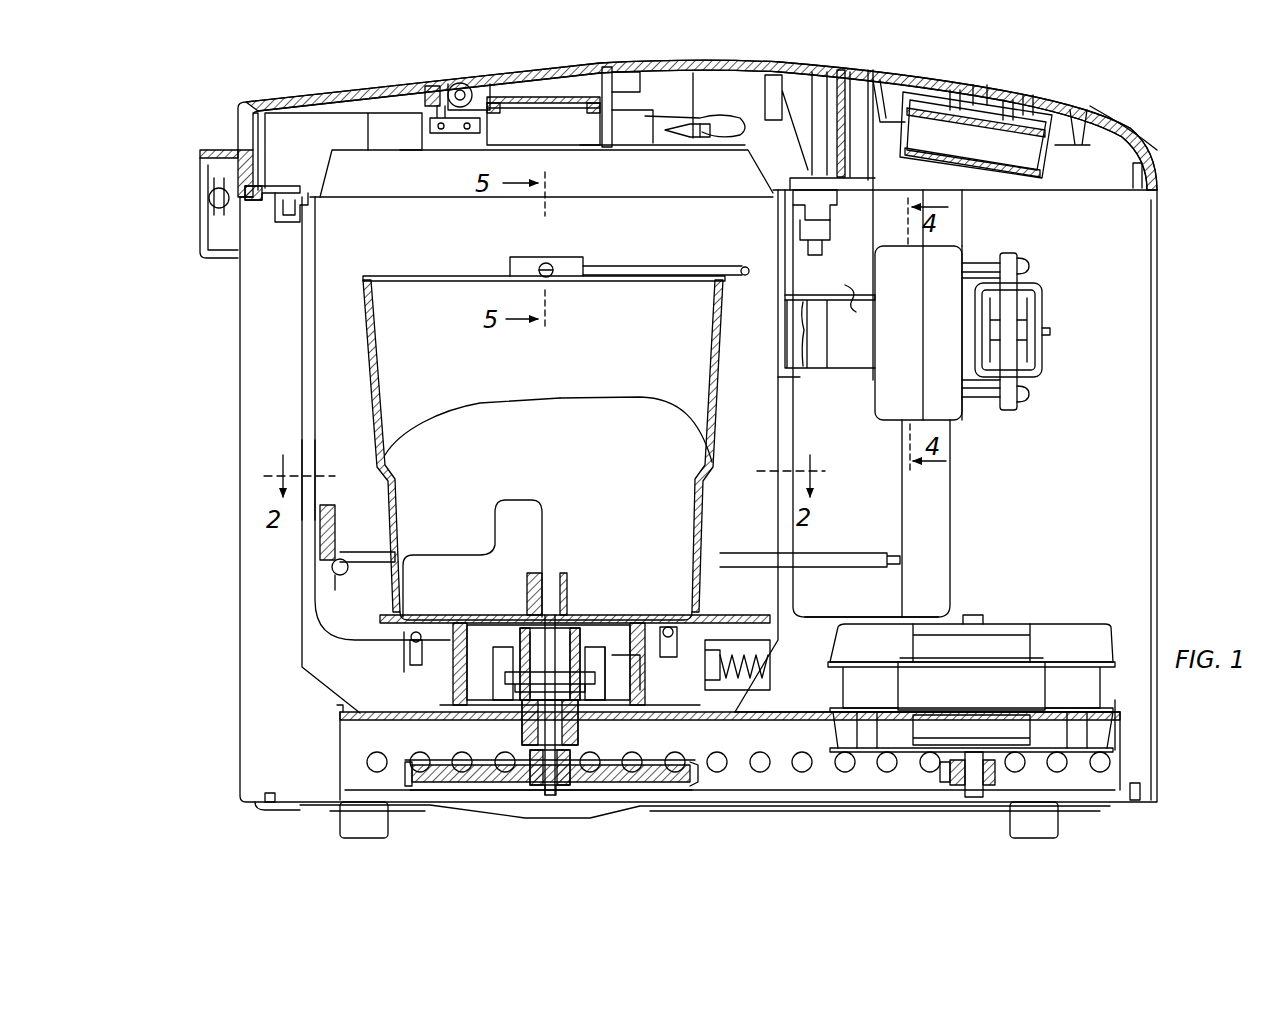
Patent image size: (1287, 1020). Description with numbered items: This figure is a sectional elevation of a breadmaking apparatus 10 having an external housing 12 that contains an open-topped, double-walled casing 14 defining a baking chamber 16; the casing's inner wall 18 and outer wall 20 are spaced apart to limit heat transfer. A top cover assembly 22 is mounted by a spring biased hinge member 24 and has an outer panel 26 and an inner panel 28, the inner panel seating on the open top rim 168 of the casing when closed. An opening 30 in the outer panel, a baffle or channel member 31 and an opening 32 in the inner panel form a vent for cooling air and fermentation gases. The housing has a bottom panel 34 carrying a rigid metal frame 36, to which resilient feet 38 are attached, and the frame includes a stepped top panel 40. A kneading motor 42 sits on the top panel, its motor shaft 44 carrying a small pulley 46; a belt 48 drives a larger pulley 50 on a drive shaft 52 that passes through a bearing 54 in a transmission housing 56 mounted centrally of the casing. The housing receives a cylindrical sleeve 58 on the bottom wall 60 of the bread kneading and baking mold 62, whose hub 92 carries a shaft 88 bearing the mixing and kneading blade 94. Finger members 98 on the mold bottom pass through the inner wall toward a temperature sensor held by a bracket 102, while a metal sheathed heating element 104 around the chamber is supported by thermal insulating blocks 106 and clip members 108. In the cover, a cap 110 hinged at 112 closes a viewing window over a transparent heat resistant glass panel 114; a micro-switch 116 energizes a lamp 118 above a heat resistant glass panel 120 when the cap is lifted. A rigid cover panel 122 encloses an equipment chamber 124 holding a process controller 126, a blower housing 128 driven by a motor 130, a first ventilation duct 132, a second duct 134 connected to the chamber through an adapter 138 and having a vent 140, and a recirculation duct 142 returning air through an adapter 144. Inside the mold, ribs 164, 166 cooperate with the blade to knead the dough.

The breadmaking apparatus 10 is at (170, 125).
The external housing 12 is at (240, 303).
The double-walled casing 14 is at (298, 388).
The baking chamber 16 is at (452, 251).
The inner wall 18 is at (315, 455).
The outer wall 20 is at (302, 428).
The top cover assembly 22 is at (668, 59).
The spring biased hinge member 24 is at (205, 232).
The outer panel 26 is at (740, 64).
The inner panel 28 is at (750, 148).
The opening 30 is at (244, 112).
The baffle or channel member 31 is at (343, 100).
The opening 32 is at (395, 140).
The bottom panel 34 is at (300, 808).
The rigid metal frame 36 is at (340, 760).
The resilient feet 38 is at (388, 817).
The stepped top panel 40 is at (778, 722).
The kneading motor 42 is at (1075, 630).
The motor shaft 44 is at (978, 800).
The small pulley 46 is at (945, 778).
The belt 48 is at (742, 790).
The larger pulley 50 is at (608, 778).
The drive shaft 52 is at (545, 790).
The bearing 54 is at (578, 735).
The transmission housing 56 is at (455, 700).
The cylindrical sleeve 58 is at (635, 668).
The bottom wall 60 is at (622, 618).
The bread kneading and baking mold 62 is at (356, 305).
The shaft 88 is at (550, 575).
The hub 92 is at (575, 600).
The mixing and kneading blade 94 is at (525, 510).
The finger members 98 is at (402, 660).
The bracket 102 is at (728, 690).
The metal sheathed heating element 104 is at (722, 560).
The thermal insulating blocks 106 is at (395, 552).
The clip members 108 is at (340, 578).
The cap 110 is at (604, 67).
The hinge 112 is at (470, 84).
The transparent heat resistant glass panel 114 is at (548, 97).
The micro-switch 116 is at (434, 86).
The lamp 118 is at (700, 150).
The heat resistant glass panel 120 is at (655, 140).
The rigid cover panel 122 is at (1138, 124).
The equipment chamber 124 is at (1150, 235).
The process controller 126 is at (928, 80).
The blower housing 128 is at (962, 418).
The motor 130 is at (1044, 372).
The first ventilation duct 132 is at (965, 222).
The second duct 134 is at (843, 366).
The adapter 138 is at (800, 285).
The vent 140 is at (855, 298).
The recirculation duct 142 is at (950, 548).
The adapter 144 is at (790, 598).
The rib 164 is at (393, 468).
The rib 166 is at (710, 478).
The open top rim 168 is at (310, 210).